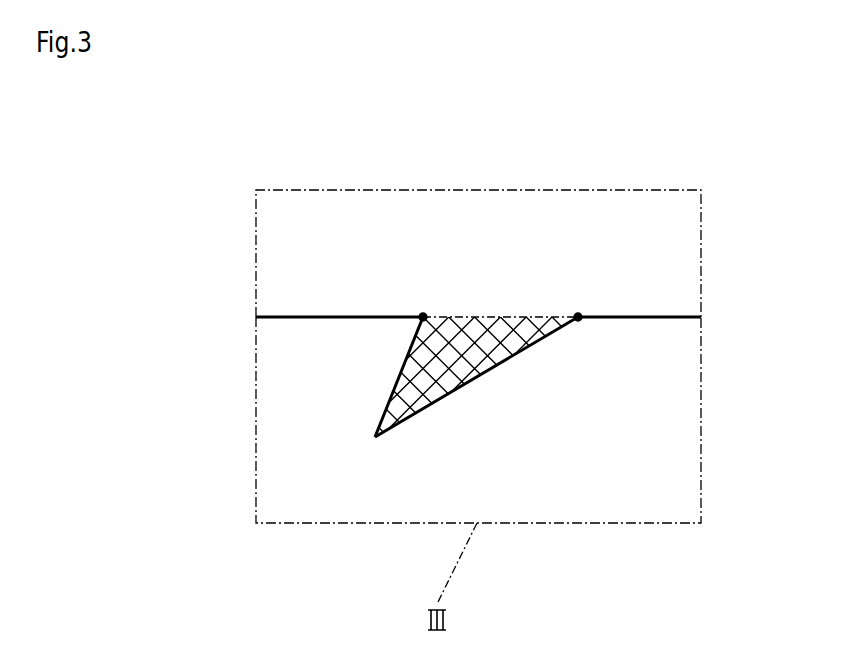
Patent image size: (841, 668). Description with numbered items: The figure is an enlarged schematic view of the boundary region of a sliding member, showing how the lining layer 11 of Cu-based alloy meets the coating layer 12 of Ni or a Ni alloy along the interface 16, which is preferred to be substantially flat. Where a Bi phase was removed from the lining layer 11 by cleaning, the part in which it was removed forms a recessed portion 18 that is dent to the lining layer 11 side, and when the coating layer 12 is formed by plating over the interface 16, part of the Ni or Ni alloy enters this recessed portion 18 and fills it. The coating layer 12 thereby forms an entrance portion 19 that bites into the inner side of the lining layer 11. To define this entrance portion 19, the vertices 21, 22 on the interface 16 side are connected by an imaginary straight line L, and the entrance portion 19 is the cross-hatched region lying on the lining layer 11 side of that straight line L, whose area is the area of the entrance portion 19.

The lining layer 11 is at (278, 467).
The coating layer 12 is at (300, 239).
The interface 16 is at (623, 317).
The recessed portion 18 is at (497, 365).
The entrance portion 19 is at (413, 375).
The vertex 21 is at (423, 314).
The vertex 22 is at (579, 314).
The imaginary straight line L is at (506, 317).